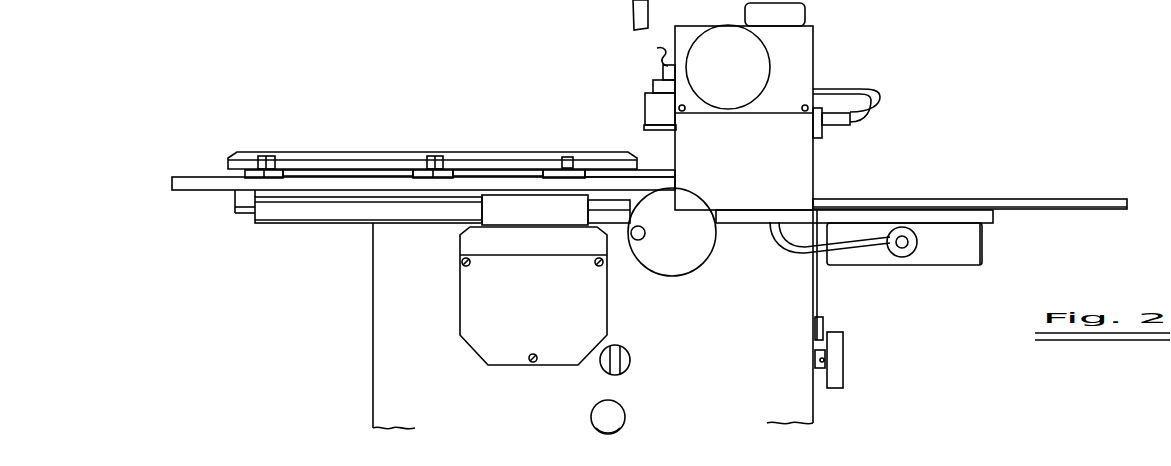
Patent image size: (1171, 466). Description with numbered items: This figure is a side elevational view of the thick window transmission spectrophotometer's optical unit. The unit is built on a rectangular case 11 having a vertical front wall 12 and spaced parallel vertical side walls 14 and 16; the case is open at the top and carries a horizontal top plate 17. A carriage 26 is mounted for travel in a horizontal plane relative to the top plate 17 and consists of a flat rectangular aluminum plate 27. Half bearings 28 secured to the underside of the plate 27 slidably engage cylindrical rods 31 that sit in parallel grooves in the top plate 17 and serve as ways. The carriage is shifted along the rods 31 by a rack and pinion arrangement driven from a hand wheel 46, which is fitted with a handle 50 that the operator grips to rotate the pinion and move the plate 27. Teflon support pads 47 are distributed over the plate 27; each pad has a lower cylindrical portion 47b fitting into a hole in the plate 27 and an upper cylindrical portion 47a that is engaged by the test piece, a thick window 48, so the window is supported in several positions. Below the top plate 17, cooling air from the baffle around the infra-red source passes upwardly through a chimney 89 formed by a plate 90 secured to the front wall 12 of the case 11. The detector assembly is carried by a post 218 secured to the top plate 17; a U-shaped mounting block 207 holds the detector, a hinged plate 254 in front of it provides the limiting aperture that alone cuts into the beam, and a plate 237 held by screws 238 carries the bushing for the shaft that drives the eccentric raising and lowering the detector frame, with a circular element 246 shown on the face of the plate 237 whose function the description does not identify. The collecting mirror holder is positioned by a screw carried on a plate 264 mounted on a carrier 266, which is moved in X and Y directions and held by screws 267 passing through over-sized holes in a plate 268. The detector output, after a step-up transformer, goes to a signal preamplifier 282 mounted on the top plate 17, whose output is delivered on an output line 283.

The case 11 is at (325, 290).
The front wall 12 is at (709, 361).
The side wall 14 is at (373, 326).
The side wall 16 is at (815, 407).
The top plate 17 is at (997, 212).
The carriage 26 is at (125, 185).
The plate 27 is at (195, 183).
The half bearings 28 is at (235, 200).
The cylindrical rods 31 is at (328, 205).
The hand wheel 46 is at (673, 222).
The support pads 47 is at (275, 170).
The top cylindrical portion 47a is at (268, 156).
The cylindrical portion 47b is at (413, 154).
The thick window 48 is at (206, 166).
The handle 50 is at (632, 12).
The chimney 89 is at (524, 195).
The plate 90 is at (545, 312).
The U-shaped mounting block 207 is at (648, 113).
The post 218 is at (735, 167).
The plate 237 is at (782, 69).
The screws 238 is at (684, 110).
The motor 246 is at (715, 62).
The plate 254 is at (663, 130).
The plate 264 is at (657, 50).
The carrier 266 is at (652, 86).
The screws 267 is at (660, 72).
The plate 268 is at (653, 82).
The signal preamplifier 282 is at (930, 251).
The output line 283 is at (790, 255).